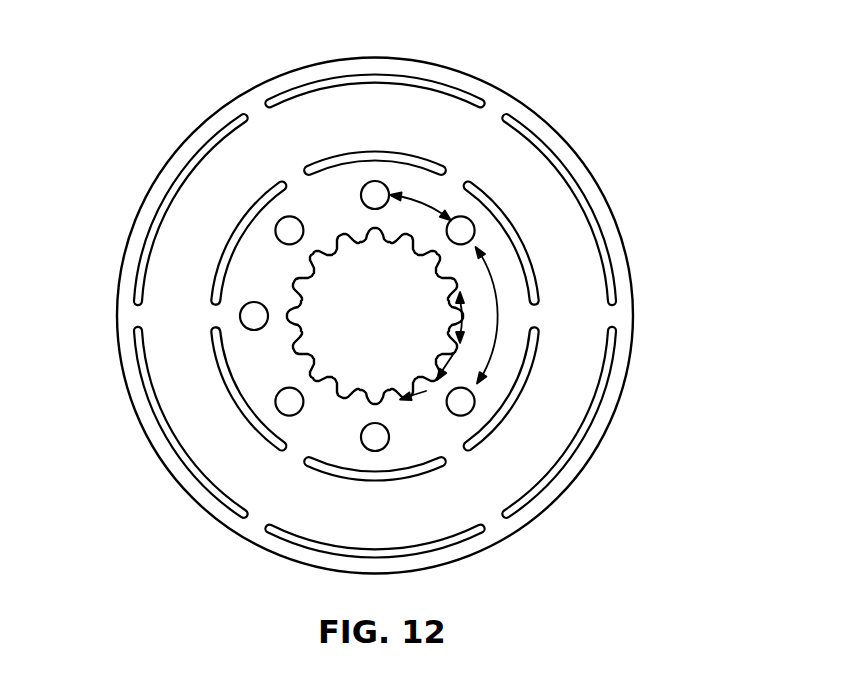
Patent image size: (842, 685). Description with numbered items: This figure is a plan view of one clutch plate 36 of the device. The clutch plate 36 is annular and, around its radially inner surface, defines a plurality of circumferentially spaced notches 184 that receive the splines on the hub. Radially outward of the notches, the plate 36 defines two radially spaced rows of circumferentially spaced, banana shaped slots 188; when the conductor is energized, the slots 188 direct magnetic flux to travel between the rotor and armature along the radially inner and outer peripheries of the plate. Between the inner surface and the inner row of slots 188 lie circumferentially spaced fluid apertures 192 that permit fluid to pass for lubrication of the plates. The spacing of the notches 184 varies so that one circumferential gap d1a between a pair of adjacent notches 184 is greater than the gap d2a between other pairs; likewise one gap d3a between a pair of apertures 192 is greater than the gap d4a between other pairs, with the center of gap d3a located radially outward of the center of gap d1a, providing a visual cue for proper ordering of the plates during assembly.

The clutch plate 36 is at (604, 192).
The banana shaped slots 188 is at (163, 411).
The fluid apertures 192 is at (294, 232).
The notches 184 is at (339, 383).
The circumferential gap between adjacent notches d1a is at (458, 313).
The circumferential gap between other pairs of notches d2a is at (399, 400).
The circumferential gap between a pair of fluid apertures d3a is at (490, 358).
The circumferential gap between other pairs of fluid apertures d4a is at (422, 203).